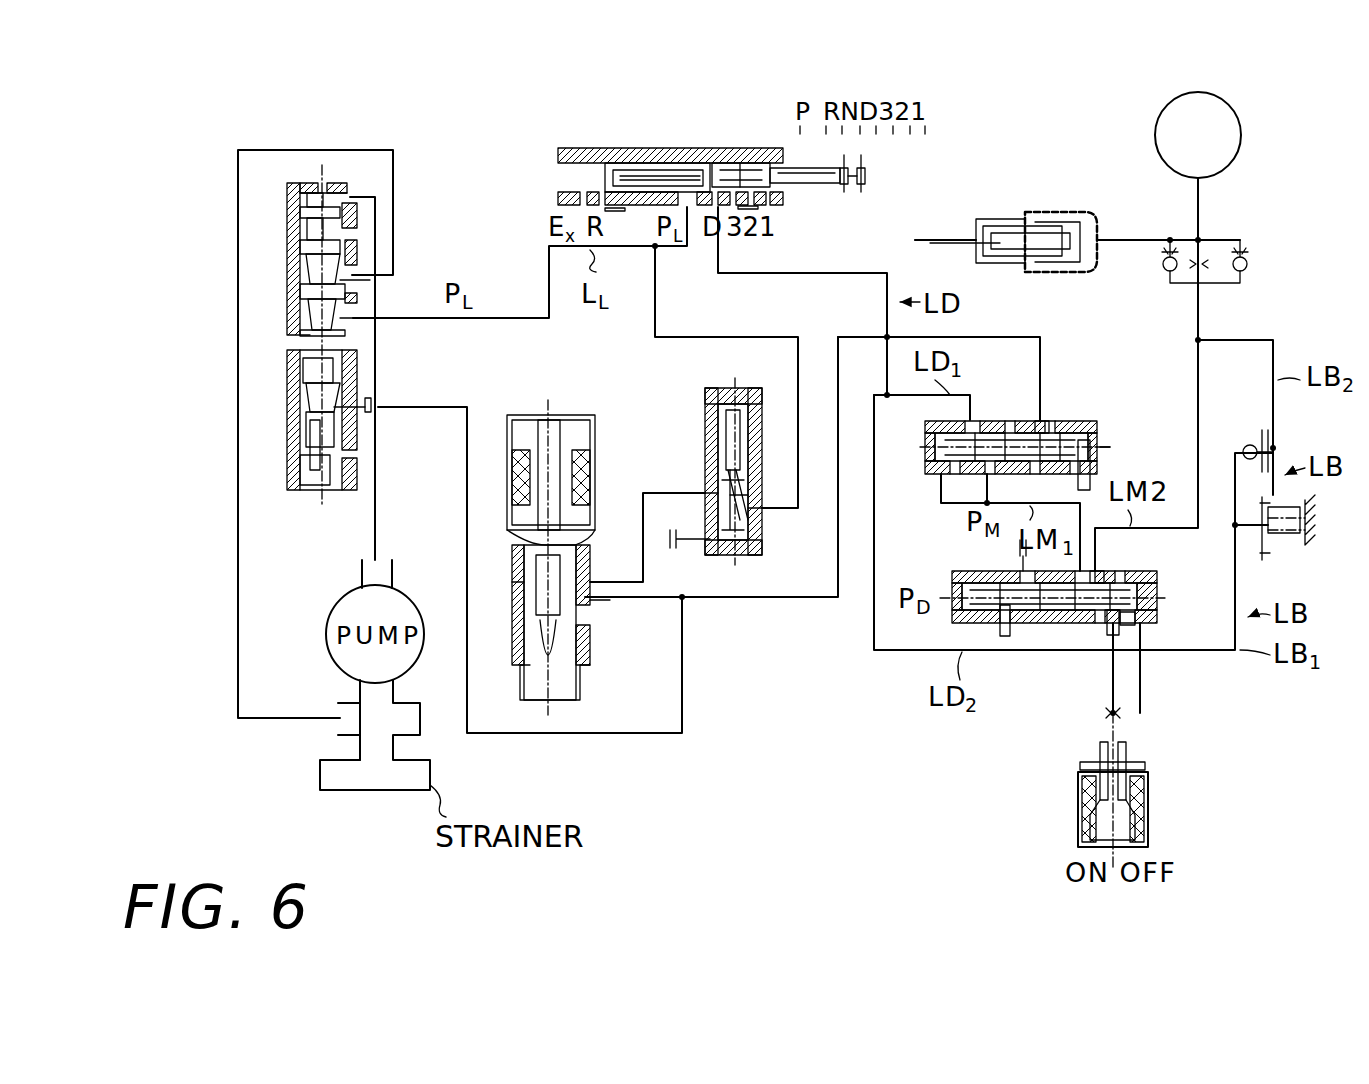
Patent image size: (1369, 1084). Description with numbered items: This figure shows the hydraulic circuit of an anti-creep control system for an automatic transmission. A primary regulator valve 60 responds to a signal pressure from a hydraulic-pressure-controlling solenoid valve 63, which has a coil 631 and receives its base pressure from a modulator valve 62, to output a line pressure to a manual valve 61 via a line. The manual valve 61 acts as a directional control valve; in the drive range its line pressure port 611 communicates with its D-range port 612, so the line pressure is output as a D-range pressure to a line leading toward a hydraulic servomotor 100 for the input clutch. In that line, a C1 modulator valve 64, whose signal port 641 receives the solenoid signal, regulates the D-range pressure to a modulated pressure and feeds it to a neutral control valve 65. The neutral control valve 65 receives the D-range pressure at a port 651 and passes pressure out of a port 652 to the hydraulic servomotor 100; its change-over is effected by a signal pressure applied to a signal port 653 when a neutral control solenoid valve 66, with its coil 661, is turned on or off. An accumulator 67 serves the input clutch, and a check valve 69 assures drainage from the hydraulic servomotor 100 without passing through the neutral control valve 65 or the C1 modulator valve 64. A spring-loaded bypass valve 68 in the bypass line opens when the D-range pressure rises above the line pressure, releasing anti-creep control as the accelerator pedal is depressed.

The primary regulator valve 60 is at (332, 172).
The manual valve 61 is at (668, 142).
The line pressure port 611 is at (664, 210).
The D-range port 612 is at (750, 226).
The modulator valve 62 is at (722, 388).
The hydraulic-pressure-controlling solenoid valve 63 is at (554, 412).
The solenoid coil 631 is at (598, 455).
The C1 modulator valve 64 is at (1098, 418).
The signal port 641 is at (1042, 418).
The neutral control valve 65 is at (962, 568).
The port 651 is at (1108, 628).
The port 652 is at (1102, 572).
The signal port 653 is at (1140, 632).
The neutral control solenoid valve 66 is at (1152, 772).
The on-off valve coil 661 is at (1150, 820).
The accumulator 67 is at (998, 212).
The bypass valve 68 is at (1282, 548).
The check valve 69 is at (1248, 445).
The hydraulic servomotor 100 is at (1242, 136).